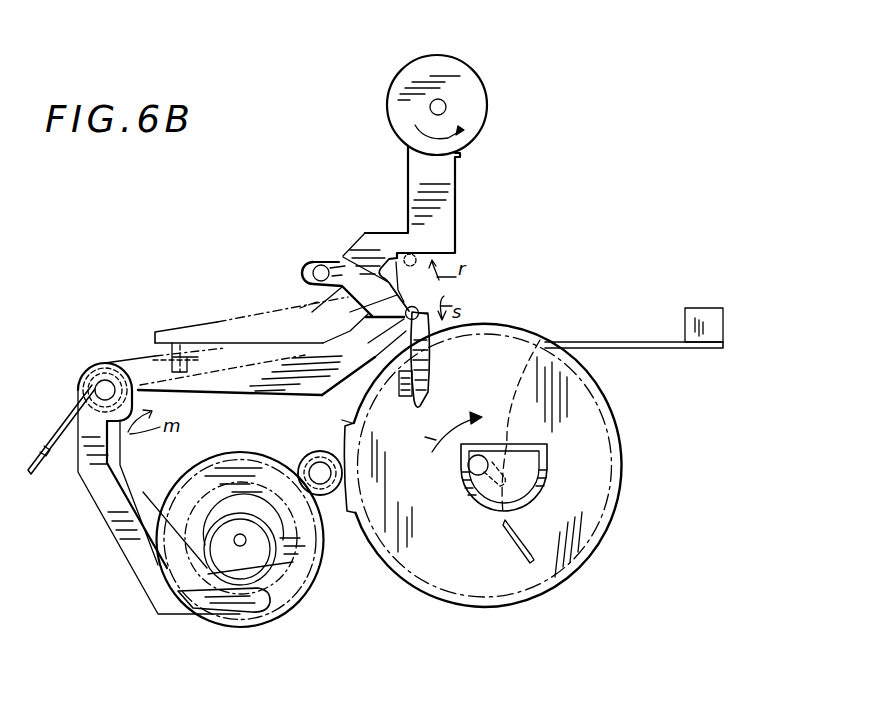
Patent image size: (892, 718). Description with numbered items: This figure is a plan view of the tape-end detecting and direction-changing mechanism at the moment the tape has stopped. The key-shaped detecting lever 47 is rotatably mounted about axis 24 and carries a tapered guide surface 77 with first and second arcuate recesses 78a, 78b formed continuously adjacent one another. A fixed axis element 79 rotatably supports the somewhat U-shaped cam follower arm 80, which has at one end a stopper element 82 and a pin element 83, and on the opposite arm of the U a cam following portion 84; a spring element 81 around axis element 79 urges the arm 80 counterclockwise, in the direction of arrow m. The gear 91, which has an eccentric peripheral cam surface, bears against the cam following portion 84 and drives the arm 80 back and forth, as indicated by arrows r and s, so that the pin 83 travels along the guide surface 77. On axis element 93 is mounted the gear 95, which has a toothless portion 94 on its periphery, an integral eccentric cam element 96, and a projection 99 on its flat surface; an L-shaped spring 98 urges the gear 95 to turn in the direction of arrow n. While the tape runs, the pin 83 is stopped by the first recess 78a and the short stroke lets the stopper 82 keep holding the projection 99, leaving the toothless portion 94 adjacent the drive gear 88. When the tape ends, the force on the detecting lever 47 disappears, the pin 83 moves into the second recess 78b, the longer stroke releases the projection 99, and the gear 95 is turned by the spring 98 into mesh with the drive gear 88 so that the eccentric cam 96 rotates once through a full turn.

The axis 24 is at (446, 107).
The detecting lever 47 is at (448, 179).
The tapered guide surface 77 is at (360, 308).
The first arcuate recess 78a is at (363, 262).
The second arcuate recess 78b is at (400, 246).
The axis element 79 is at (103, 384).
The cam follower arm 80 is at (230, 352).
The spring element 81 is at (63, 396).
The stopper element 82 is at (433, 348).
The pin element 83 is at (415, 255).
The cam following portion 84 is at (288, 592).
The drive gear 88 is at (331, 497).
The gear 91 is at (272, 534).
The axis element 93 is at (468, 474).
The toothless portion 94 is at (345, 424).
The gear 95 is at (623, 500).
The eccentric cam element 96 is at (533, 498).
The L-shaped spring 98 is at (605, 342).
The projection 99 is at (399, 394).